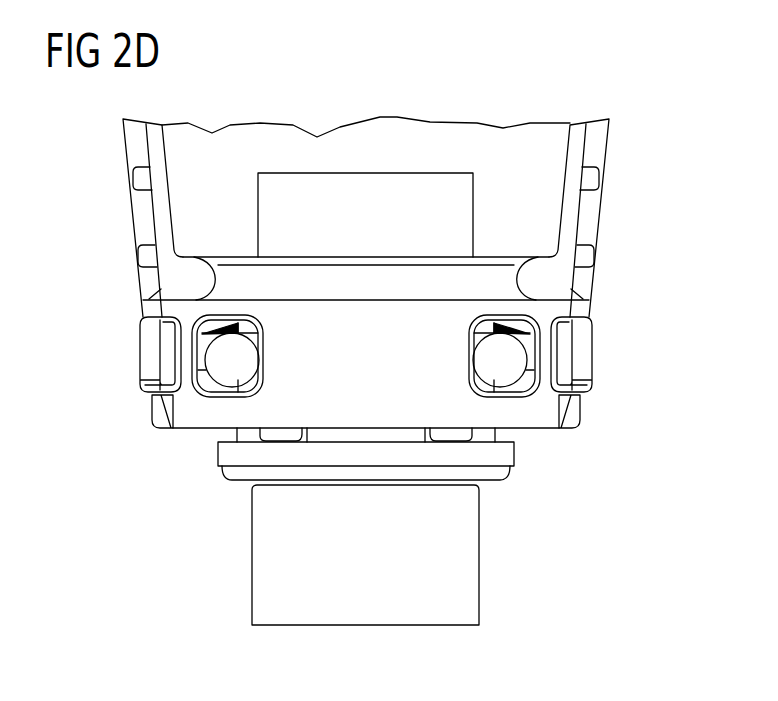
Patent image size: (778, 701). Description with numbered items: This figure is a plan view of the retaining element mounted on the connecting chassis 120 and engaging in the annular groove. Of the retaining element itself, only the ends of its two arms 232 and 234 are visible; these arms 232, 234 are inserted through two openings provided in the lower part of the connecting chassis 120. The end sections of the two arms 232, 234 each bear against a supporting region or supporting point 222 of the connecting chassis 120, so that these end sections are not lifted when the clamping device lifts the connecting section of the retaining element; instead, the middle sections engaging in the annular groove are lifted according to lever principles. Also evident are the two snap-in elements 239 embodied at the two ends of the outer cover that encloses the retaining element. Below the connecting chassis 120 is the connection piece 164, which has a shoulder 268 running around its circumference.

The connecting chassis 120 is at (136, 148).
The snap-in elements 239 is at (146, 350).
The supporting point 222 is at (231, 391).
The arm 232 is at (245, 360).
The arm 234 is at (485, 359).
The shoulder 268 is at (233, 458).
The connection piece 164 is at (462, 587).